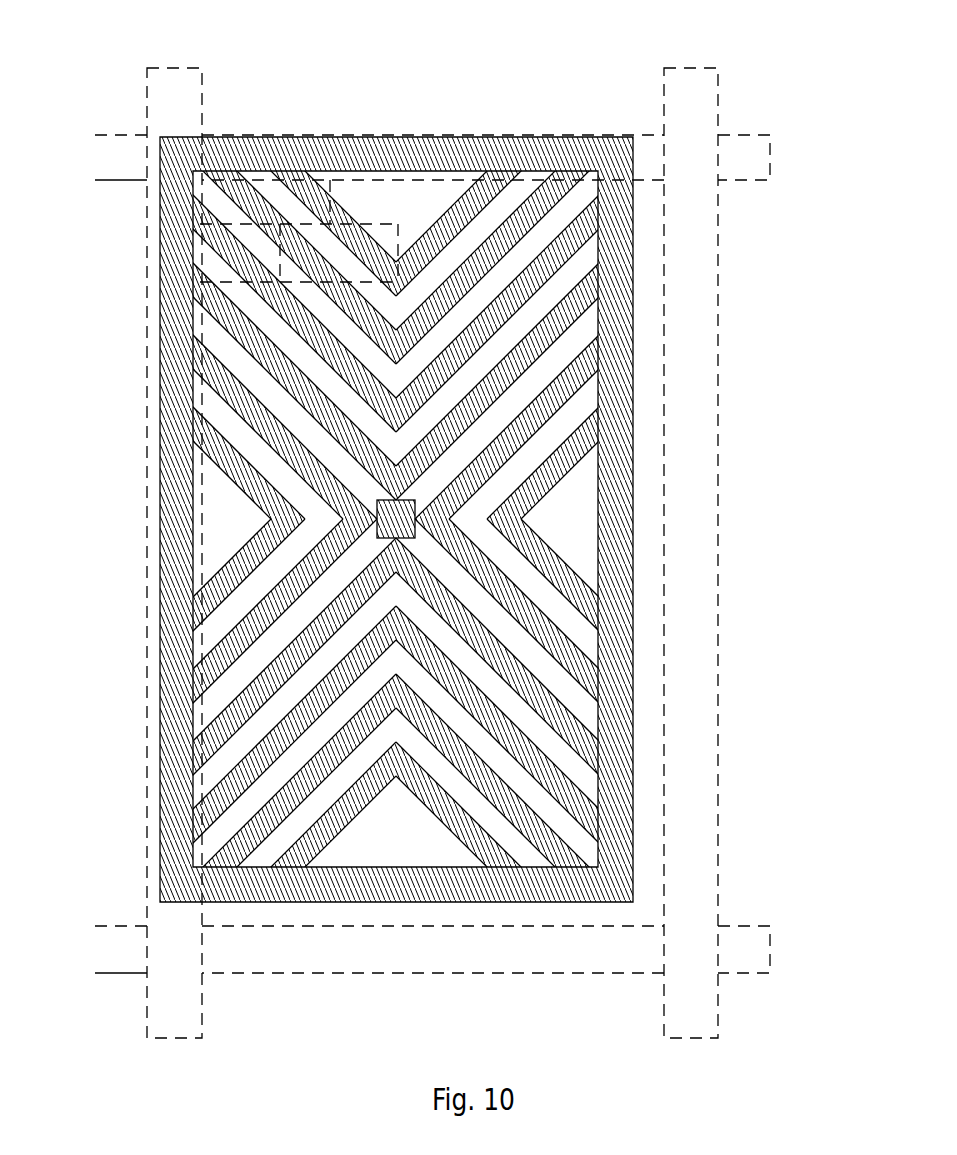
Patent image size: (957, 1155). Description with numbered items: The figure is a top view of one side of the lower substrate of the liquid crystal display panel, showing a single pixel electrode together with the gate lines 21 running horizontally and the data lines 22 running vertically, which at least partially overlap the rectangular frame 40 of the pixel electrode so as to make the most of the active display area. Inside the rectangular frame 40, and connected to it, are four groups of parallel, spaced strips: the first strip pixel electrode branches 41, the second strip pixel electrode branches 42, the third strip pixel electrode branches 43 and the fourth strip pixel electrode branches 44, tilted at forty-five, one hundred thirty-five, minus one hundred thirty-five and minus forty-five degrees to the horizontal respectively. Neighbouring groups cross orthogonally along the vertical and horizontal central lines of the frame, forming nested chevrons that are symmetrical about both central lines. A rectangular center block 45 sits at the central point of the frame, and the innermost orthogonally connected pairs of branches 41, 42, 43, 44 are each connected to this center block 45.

The gate lines 21 is at (113, 171).
The data lines 22 is at (177, 88).
The rectangular frame 40 is at (396, 171).
The first strip pixel electrode branches 41 is at (507, 305).
The second strip pixel electrode branches 42 is at (317, 335).
The third strip pixel electrode branches 43 is at (330, 757).
The fourth strip pixel electrode branches 44 is at (470, 770).
The center block 45 is at (397, 518).